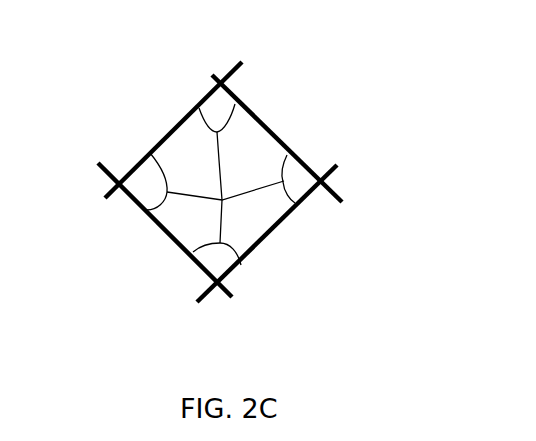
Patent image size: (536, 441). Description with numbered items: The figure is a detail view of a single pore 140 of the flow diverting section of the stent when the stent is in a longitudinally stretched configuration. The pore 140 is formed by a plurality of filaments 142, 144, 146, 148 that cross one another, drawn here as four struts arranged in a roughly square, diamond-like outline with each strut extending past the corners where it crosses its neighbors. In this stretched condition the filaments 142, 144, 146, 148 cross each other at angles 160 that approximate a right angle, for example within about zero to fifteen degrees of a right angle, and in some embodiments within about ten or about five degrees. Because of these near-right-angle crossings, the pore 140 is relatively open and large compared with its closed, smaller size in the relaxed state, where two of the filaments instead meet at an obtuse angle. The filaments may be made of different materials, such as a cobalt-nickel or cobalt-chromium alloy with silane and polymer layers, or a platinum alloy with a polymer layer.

The pore 140 is at (262, 111).
The filament 142 is at (263, 262).
The filament 144 is at (303, 148).
The filament 146 is at (158, 138).
The filament 148 is at (147, 233).
The angles 160 is at (223, 202).